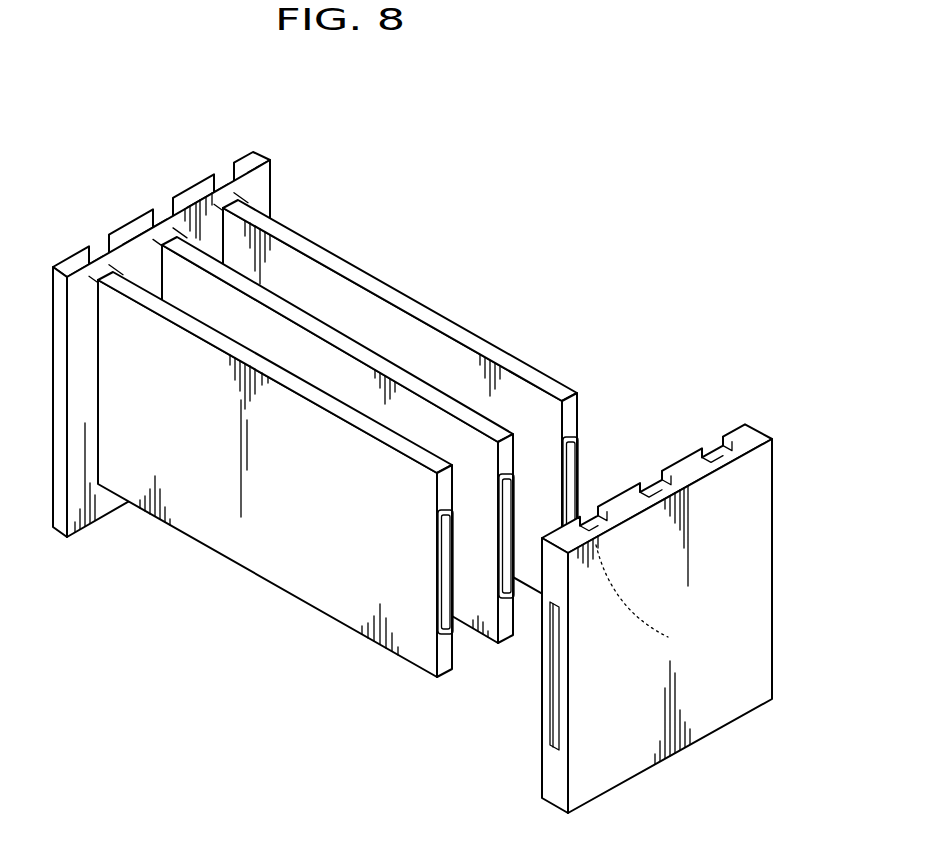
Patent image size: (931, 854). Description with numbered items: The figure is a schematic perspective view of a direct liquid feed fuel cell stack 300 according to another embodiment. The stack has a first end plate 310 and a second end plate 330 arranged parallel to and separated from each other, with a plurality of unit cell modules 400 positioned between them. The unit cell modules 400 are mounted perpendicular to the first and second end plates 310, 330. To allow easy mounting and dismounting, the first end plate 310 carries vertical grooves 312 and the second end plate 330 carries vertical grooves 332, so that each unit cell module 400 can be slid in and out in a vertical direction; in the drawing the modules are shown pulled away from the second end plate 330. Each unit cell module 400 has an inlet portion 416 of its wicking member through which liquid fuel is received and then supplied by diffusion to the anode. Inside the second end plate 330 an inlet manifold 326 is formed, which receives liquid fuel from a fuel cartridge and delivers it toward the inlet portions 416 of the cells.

The direct liquid feed fuel cell stack 300 is at (450, 451).
The first end plate 310 is at (161, 313).
The vertical grooves 312 is at (103, 254).
The inlet manifold 326 is at (553, 683).
The second end plate 330 is at (656, 602).
The vertical grooves 332 is at (645, 488).
The unit cell modules 400 is at (338, 438).
The inlet portion 416 is at (437, 525).